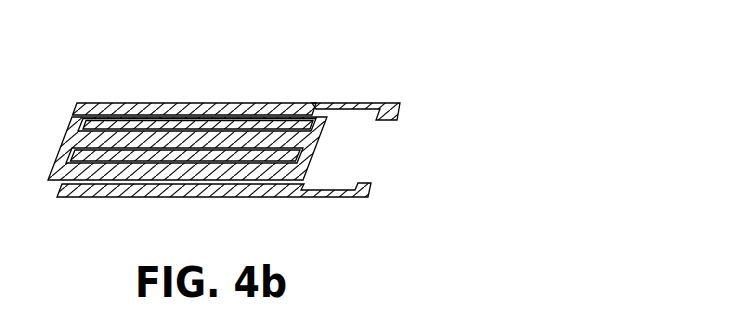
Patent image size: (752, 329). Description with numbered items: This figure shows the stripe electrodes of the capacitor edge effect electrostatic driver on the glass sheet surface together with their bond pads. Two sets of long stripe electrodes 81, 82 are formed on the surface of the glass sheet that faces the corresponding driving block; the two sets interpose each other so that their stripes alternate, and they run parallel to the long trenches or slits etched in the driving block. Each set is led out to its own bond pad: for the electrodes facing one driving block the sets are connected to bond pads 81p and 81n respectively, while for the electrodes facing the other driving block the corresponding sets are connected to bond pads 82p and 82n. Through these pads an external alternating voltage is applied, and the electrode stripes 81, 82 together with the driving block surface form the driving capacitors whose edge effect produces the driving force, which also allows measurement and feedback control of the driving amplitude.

The long stripe electrode 81 is at (224, 138).
The long stripe electrode 82 is at (141, 157).
The bond pad 81p is at (431, 117).
The bond pad 82p is at (400, 112).
The bond pad 81n is at (291, 190).
The bond pad 82n is at (370, 190).